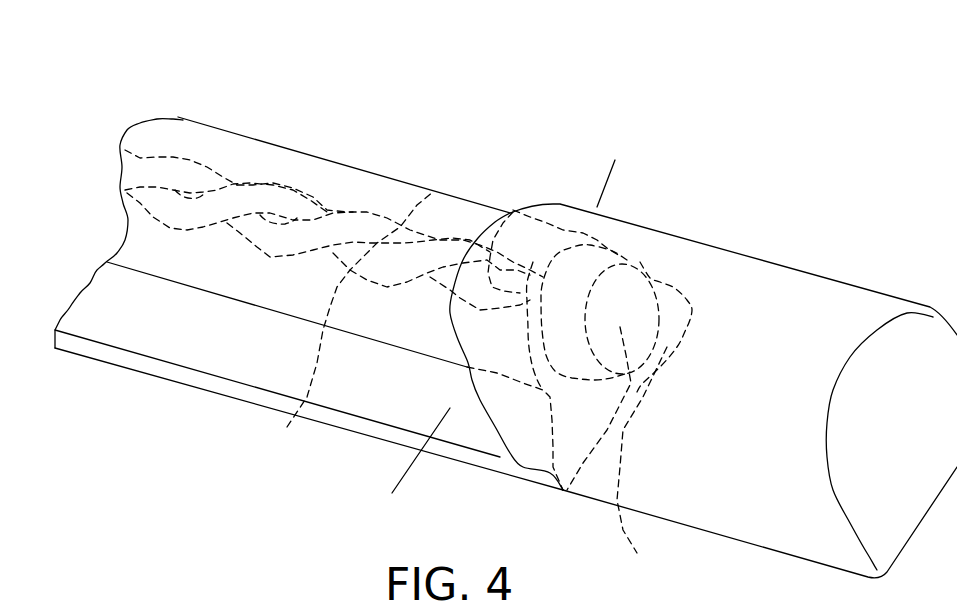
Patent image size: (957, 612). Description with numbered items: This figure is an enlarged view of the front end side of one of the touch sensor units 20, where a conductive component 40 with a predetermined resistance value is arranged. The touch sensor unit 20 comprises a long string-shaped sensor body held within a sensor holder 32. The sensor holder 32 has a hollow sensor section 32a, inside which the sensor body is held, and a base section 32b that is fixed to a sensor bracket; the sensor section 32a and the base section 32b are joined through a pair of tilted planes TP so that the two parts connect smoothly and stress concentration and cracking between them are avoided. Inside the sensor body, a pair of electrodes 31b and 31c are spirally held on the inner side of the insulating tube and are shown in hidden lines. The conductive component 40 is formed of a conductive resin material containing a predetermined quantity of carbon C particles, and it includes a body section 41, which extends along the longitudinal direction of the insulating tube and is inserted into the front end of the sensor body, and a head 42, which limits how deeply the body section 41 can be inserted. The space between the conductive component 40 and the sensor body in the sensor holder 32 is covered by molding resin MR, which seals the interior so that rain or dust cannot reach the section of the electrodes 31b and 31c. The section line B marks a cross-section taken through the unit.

The touch sensor unit 20 is at (267, 87).
The sensor holder 32 is at (340, 160).
The sensor section 32a is at (203, 148).
The base section 32b is at (177, 372).
The electrode 31b is at (287, 427).
The electrode 31c is at (433, 192).
The tilted plane TP is at (135, 310).
The body section 41 is at (513, 212).
The conductive component 40 is at (645, 256).
The head 42 is at (637, 553).
The molding resin MR is at (795, 327).
The section line B is at (412, 492).
The carbon C is at (693, 143).